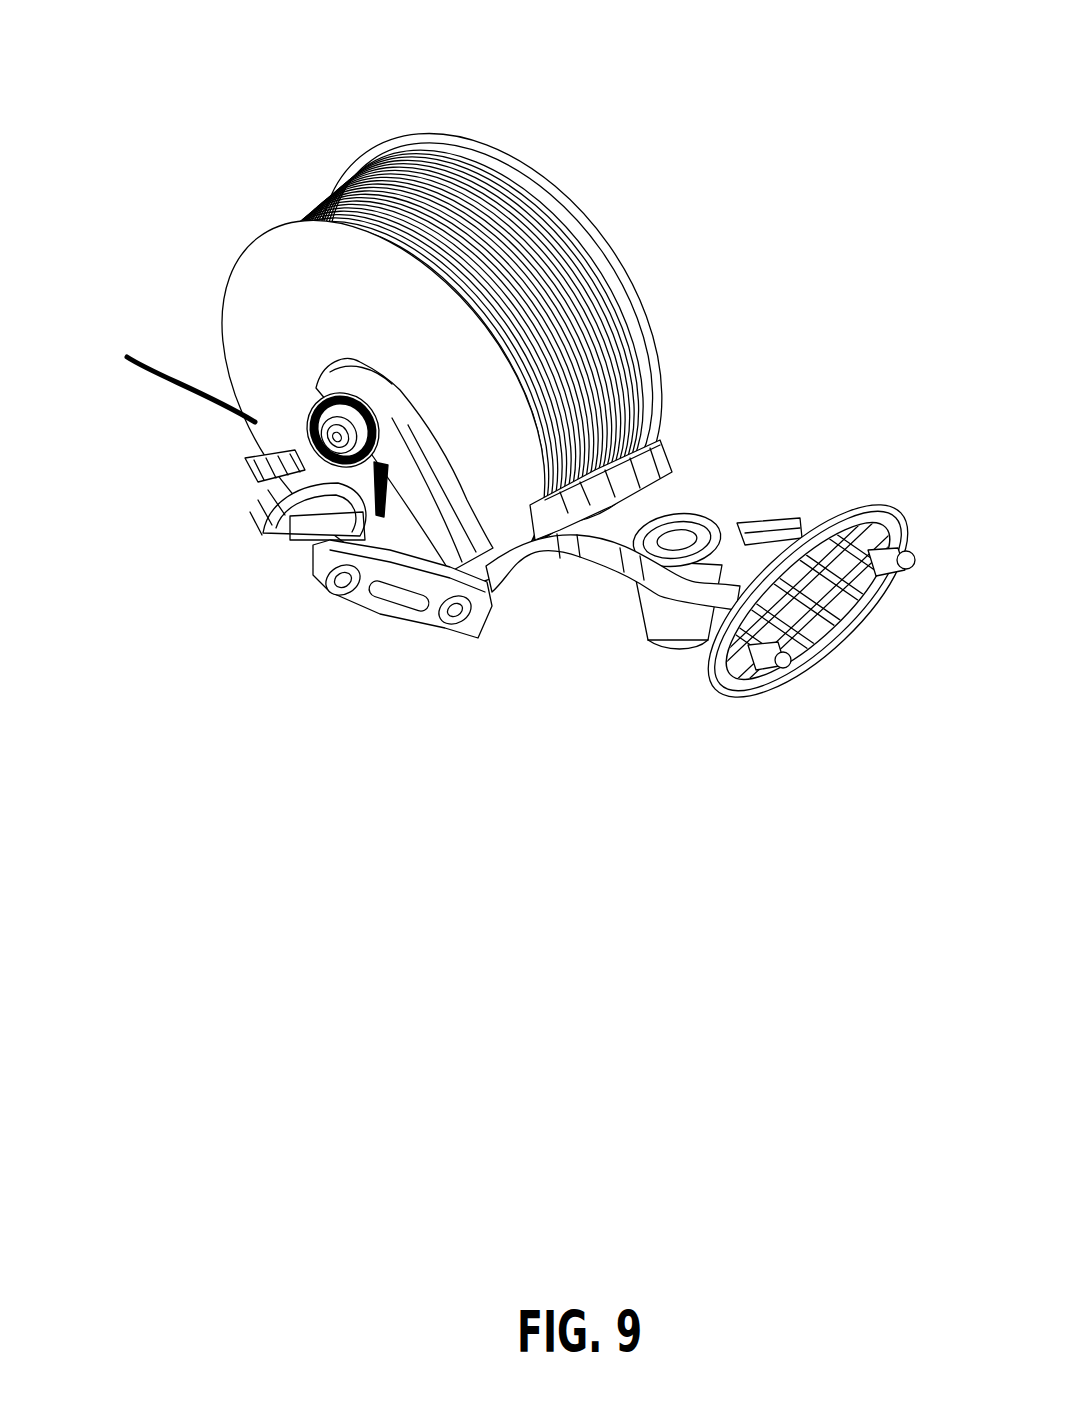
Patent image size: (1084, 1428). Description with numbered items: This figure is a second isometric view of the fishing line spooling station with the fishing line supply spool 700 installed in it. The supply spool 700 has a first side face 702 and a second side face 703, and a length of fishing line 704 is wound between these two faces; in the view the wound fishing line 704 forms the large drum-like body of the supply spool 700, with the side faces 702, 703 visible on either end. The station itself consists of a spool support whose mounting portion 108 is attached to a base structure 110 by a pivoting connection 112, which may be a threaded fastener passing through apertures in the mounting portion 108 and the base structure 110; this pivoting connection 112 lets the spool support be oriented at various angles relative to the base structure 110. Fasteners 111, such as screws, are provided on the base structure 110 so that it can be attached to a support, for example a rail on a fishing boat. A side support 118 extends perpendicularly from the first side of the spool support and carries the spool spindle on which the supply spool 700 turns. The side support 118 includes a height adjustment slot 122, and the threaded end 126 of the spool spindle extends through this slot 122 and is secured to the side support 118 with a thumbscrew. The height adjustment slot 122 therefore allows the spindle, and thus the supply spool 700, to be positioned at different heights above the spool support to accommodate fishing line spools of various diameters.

The fishing line supply spool 700 is at (534, 121).
The first side face 702 is at (418, 130).
The second side face 703 is at (238, 263).
The fishing line 704 is at (157, 378).
The mounting portion 108 is at (663, 497).
The base structure 110 is at (778, 523).
The fasteners 111 is at (895, 572).
The pivoting connection 112 is at (665, 547).
The side support 118 is at (322, 545).
The height adjustment slot 122 is at (373, 497).
The threaded end 126 is at (312, 418).